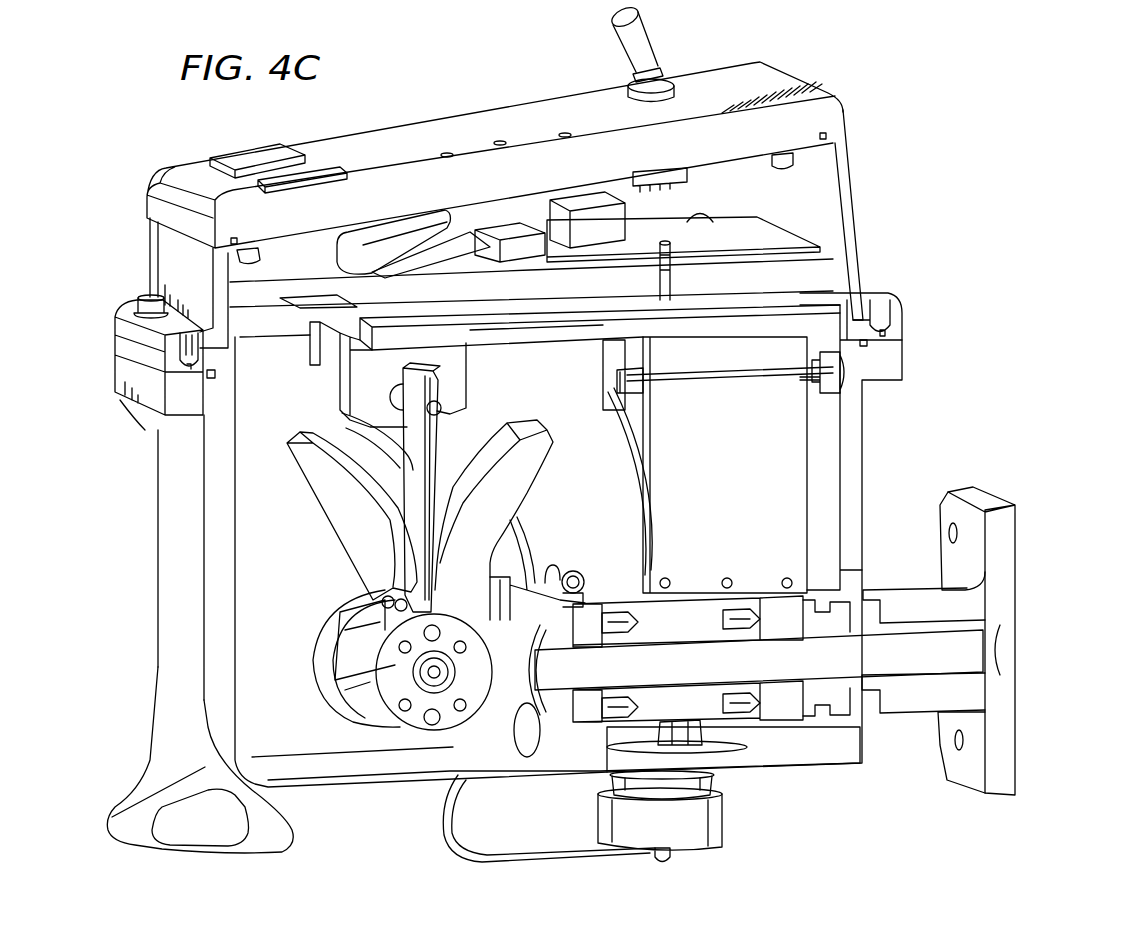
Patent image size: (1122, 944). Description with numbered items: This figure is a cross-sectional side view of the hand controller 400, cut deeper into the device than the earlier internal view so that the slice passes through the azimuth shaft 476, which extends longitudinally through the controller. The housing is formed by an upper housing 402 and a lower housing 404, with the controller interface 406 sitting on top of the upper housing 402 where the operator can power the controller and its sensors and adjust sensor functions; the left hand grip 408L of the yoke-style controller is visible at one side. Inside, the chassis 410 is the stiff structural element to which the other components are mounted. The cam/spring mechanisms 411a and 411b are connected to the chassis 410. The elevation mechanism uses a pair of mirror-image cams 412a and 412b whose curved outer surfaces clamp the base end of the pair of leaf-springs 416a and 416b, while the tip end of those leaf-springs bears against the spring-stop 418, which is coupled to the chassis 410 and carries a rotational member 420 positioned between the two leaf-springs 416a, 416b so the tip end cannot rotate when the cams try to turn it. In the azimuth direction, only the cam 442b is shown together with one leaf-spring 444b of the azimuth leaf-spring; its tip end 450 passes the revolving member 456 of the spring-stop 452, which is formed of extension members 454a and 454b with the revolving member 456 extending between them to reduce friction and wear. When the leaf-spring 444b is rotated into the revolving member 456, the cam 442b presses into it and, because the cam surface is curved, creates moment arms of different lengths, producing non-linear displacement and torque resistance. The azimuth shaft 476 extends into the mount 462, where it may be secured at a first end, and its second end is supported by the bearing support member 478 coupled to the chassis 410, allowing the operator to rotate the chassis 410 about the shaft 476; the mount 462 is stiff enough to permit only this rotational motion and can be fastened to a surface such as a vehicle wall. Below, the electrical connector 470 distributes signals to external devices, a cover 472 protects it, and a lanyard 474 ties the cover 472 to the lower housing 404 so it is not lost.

The hand controller 400 is at (978, 221).
The upper housing 402 is at (852, 183).
The lower housing 404 is at (210, 563).
The controller interface 406 is at (445, 97).
The left hand grip 408L is at (147, 767).
The chassis 410 is at (862, 503).
The cam/spring mechanism 411a is at (317, 707).
The cam/spring mechanism 411b is at (846, 472).
The cam 412a is at (530, 498).
The cam 412b is at (325, 516).
The leaf-spring 416a is at (452, 380).
The leaf-spring 416b is at (413, 450).
The spring-stop 418 is at (332, 383).
The rotational member 420 is at (458, 410).
The cam 442b is at (628, 478).
The leaf-spring 444b is at (797, 438).
The tip end 450 is at (712, 340).
The spring-stop 452 is at (580, 398).
The extension member 454a is at (611, 388).
The extension member 454b is at (828, 367).
The revolving member 456 is at (725, 376).
The mount 462 is at (1017, 538).
The electrical connector 470 is at (718, 778).
The cover 472 is at (727, 830).
The lanyard 474 is at (448, 840).
The azimuth shaft 476 is at (900, 662).
The bearing support member 478 is at (526, 758).